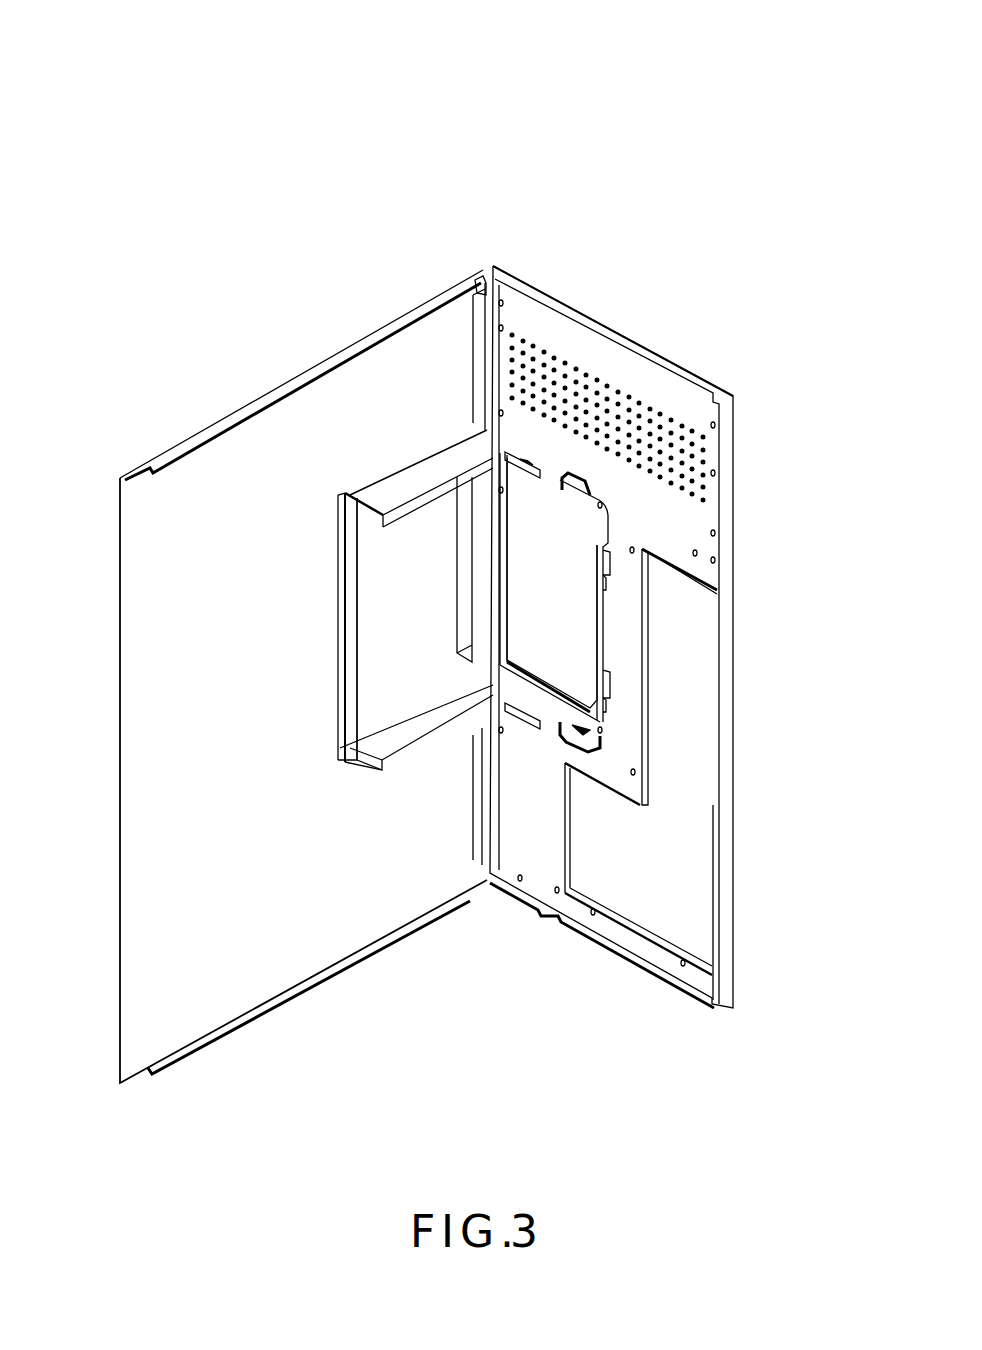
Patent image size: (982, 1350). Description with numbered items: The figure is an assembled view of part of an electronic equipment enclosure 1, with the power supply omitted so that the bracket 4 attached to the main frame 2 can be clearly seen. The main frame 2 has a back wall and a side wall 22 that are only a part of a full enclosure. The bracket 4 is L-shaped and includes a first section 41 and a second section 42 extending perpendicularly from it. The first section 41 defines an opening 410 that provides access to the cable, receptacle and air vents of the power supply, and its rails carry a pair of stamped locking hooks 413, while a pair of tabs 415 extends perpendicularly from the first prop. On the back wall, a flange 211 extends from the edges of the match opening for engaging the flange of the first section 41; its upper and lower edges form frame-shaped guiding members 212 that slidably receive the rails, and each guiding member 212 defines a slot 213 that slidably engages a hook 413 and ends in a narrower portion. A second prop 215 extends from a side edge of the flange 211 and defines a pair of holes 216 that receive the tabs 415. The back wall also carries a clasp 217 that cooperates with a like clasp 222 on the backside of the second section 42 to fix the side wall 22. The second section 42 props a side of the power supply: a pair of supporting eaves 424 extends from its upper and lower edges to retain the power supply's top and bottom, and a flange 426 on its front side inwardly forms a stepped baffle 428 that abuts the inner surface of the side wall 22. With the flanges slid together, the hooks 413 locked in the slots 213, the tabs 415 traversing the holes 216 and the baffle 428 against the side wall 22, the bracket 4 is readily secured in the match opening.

The electronic equipment enclosure 1 is at (599, 38).
The main frame 2 is at (485, 258).
The side wall 22 is at (393, 342).
The flange 211 is at (603, 560).
The guiding member 212 is at (600, 493).
The slot 213 is at (525, 458).
The second prop 215 is at (643, 637).
The holes 216 is at (598, 556).
The clasp 217 is at (475, 345).
The hinge 222 is at (482, 272).
The bracket 4 is at (607, 752).
The first section 41 is at (502, 682).
The opening 410 is at (553, 567).
The locking hooks 413 is at (550, 477).
The tabs 415 is at (604, 578).
The second section 42 is at (387, 570).
The supporting eaves 424 is at (350, 513).
The flange 426 is at (380, 508).
The baffle 428 is at (337, 503).